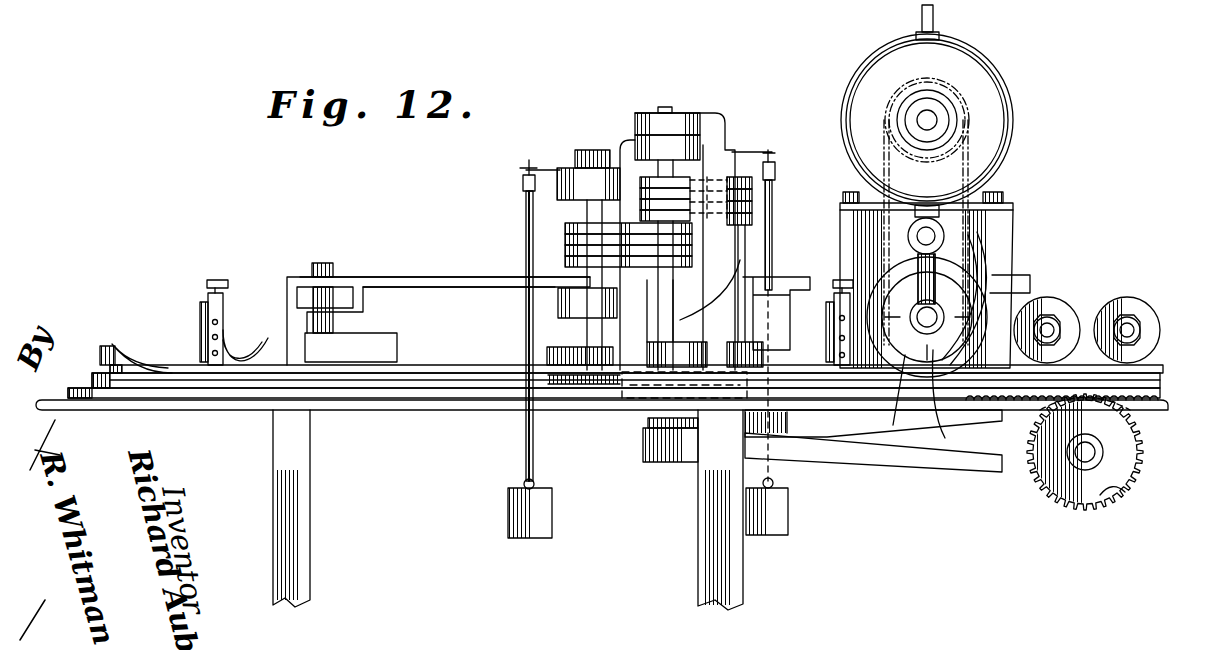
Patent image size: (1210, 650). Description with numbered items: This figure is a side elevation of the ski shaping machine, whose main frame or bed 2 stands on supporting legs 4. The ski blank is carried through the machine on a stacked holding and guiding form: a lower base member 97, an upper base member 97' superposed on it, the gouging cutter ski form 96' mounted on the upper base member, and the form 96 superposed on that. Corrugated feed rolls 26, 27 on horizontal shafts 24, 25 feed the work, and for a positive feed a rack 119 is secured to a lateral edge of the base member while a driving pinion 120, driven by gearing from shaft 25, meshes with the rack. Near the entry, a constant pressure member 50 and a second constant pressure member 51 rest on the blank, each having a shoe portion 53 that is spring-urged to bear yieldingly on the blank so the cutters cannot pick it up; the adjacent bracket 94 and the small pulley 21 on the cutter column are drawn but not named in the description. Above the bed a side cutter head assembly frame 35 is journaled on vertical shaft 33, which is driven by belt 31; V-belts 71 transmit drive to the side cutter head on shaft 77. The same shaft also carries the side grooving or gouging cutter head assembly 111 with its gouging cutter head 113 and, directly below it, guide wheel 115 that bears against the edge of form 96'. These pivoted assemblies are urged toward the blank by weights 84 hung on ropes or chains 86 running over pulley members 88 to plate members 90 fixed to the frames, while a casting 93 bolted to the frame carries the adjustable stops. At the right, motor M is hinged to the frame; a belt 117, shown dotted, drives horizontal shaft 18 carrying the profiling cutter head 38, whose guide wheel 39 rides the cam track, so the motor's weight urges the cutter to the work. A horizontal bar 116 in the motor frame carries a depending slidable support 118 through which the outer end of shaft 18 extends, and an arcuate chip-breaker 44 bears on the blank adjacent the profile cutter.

The main frame or bed 2 is at (131, 411).
The supporting legs 4 is at (273, 490).
The horizontal shaft 18 is at (873, 396).
The spool 21 is at (587, 303).
The horizontal shaft 24 is at (1050, 322).
The horizontal shaft 25 is at (1132, 324).
The corrugated feed roll 26 is at (1052, 305).
The corrugated feed roll 27 is at (1130, 300).
The belt 31 is at (855, 455).
The vertical shaft 33 is at (673, 305).
The side cutter head assembly frame 35 is at (720, 165).
The horizontal profiling cutter head 38 is at (954, 400).
The guide wheel 39 is at (905, 278).
The arcuate shaped chip-breaker 44 is at (1010, 280).
The constant pressure member 50 is at (207, 296).
The constant pressure member 51 is at (223, 330).
The shoe portion 53 is at (268, 345).
The V-belts 71 is at (700, 185).
The shaft 77 is at (740, 240).
The weight 84 is at (552, 510).
The rope or chain 86 is at (527, 324).
The pulley member 88 is at (520, 186).
The plate member 90 is at (531, 170).
The casting 93 is at (428, 283).
The bracket 94 is at (287, 318).
The form 96 is at (614, 414).
The ski form 96' is at (626, 412).
The lower base member 97 is at (620, 392).
The upper base member 97' is at (116, 357).
The side grooving or gouging cutter head assembly 111 is at (628, 142).
The gouging cutter head 113 is at (572, 340).
The guide wheel 115 is at (570, 402).
The horizontal bar 116 is at (990, 200).
The belt 117 is at (940, 230).
The slidable support 118 is at (945, 258).
The rack 119 is at (1140, 415).
The driving pinion 120 is at (1118, 500).